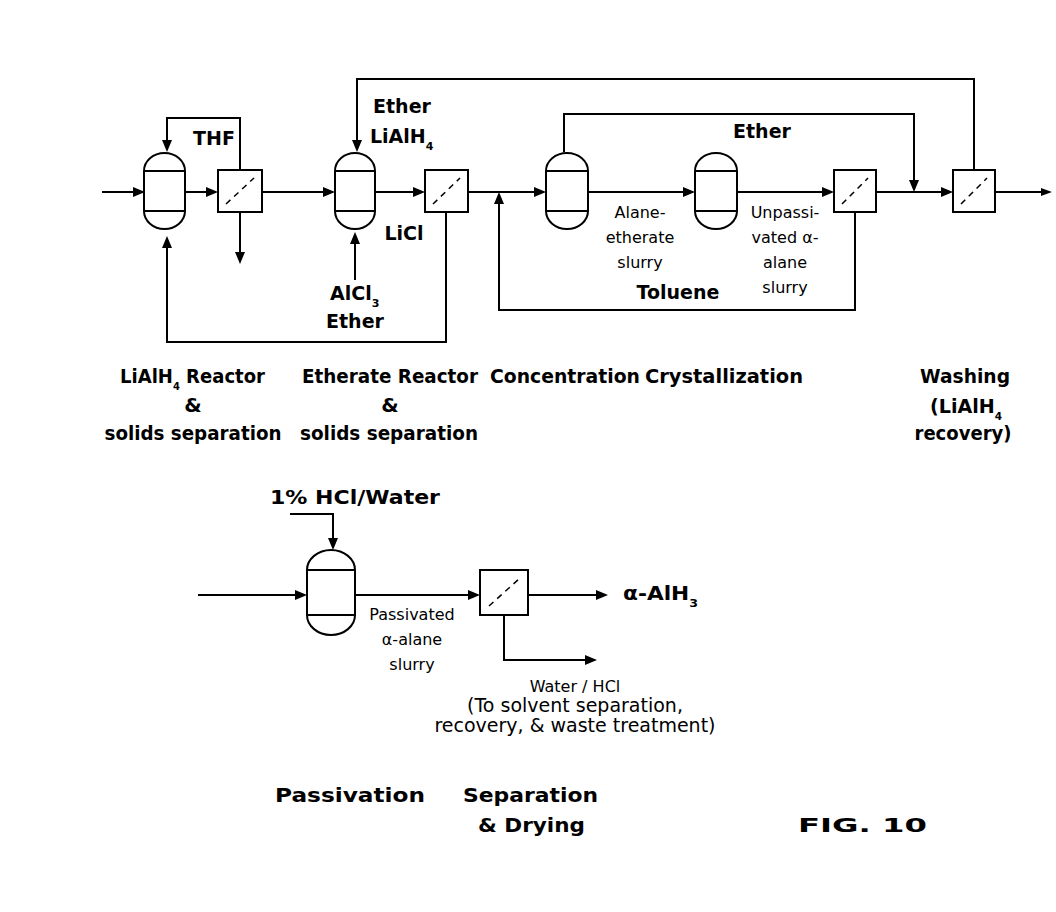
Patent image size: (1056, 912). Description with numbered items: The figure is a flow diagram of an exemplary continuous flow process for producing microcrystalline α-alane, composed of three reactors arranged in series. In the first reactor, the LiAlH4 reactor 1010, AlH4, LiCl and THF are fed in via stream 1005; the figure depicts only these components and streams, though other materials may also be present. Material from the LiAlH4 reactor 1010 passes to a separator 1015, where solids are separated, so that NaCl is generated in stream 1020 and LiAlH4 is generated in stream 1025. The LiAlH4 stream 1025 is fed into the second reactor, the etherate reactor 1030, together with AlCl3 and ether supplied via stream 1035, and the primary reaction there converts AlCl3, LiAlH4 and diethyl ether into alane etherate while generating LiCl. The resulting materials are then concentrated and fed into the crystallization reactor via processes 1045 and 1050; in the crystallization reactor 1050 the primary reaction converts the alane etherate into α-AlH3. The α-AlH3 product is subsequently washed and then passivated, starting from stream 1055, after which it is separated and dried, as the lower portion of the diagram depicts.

The stream 1005 is at (122, 180).
The LiAlH4 reactor 1010 is at (153, 152).
The separator 1015 is at (248, 170).
The stream 1020 is at (213, 293).
The stream 1025 is at (288, 198).
The etherate reactor 1030 is at (340, 150).
The stream 1035 is at (389, 290).
The process 1045 is at (555, 152).
The crystallization reactor 1050 is at (712, 152).
The stream 1055 is at (625, 380).